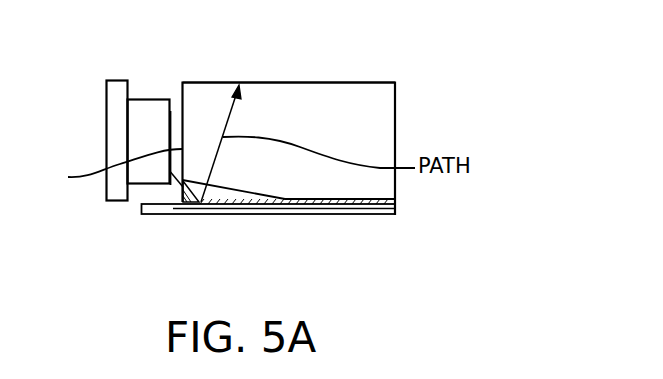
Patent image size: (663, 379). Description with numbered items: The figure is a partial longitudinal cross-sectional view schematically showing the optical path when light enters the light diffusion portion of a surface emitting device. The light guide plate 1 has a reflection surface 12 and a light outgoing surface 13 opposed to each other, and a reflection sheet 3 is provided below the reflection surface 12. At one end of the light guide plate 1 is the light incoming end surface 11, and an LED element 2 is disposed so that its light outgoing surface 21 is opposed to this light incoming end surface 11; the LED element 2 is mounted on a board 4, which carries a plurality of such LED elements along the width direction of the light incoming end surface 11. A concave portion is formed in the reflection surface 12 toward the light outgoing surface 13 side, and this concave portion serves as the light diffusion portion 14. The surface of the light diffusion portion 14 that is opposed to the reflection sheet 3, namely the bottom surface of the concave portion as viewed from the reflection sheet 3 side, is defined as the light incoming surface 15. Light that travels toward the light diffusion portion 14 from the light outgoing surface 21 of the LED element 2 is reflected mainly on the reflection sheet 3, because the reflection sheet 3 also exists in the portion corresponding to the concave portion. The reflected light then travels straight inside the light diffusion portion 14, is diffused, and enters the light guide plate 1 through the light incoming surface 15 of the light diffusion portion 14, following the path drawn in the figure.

The light guide plate 1 is at (380, 110).
The LED element 2 is at (146, 99).
The reflection sheet 3 is at (355, 215).
The board 4 is at (106, 107).
The light incoming end surface 11 is at (112, 170).
The reflection surface 12 is at (382, 200).
The light outgoing surface 13 is at (313, 81).
The light diffusion portion 14 is at (173, 215).
The light incoming surface 15 is at (235, 204).
The light outgoing surface 21 is at (172, 111).